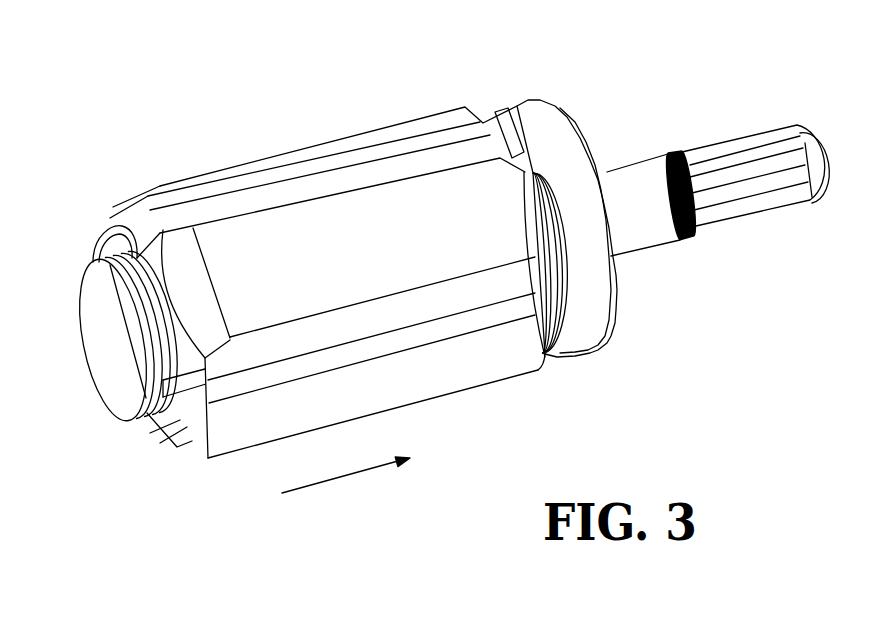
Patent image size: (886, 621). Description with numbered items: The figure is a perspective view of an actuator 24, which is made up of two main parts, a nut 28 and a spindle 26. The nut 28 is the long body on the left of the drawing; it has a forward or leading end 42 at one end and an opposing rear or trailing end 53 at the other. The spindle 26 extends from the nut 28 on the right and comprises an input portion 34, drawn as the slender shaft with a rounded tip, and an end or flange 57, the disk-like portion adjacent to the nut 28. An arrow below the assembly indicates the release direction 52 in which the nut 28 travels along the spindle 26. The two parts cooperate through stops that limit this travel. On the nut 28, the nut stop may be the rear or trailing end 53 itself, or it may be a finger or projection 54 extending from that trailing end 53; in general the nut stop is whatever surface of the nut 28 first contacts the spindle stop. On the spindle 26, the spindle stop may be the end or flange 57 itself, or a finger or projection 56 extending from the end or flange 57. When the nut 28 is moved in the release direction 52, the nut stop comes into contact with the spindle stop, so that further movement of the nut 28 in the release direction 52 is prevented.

The actuator 24 is at (195, 108).
The spindle 26 is at (655, 178).
The nut 28 is at (360, 180).
The input portion 34 is at (777, 163).
The forward or leading end 42 is at (115, 212).
The release direction 52 is at (352, 478).
The rear or trailing end 53 is at (540, 368).
The finger or projection 54 is at (516, 153).
The finger or projection 56 is at (520, 162).
The end or flange 57 is at (583, 300).